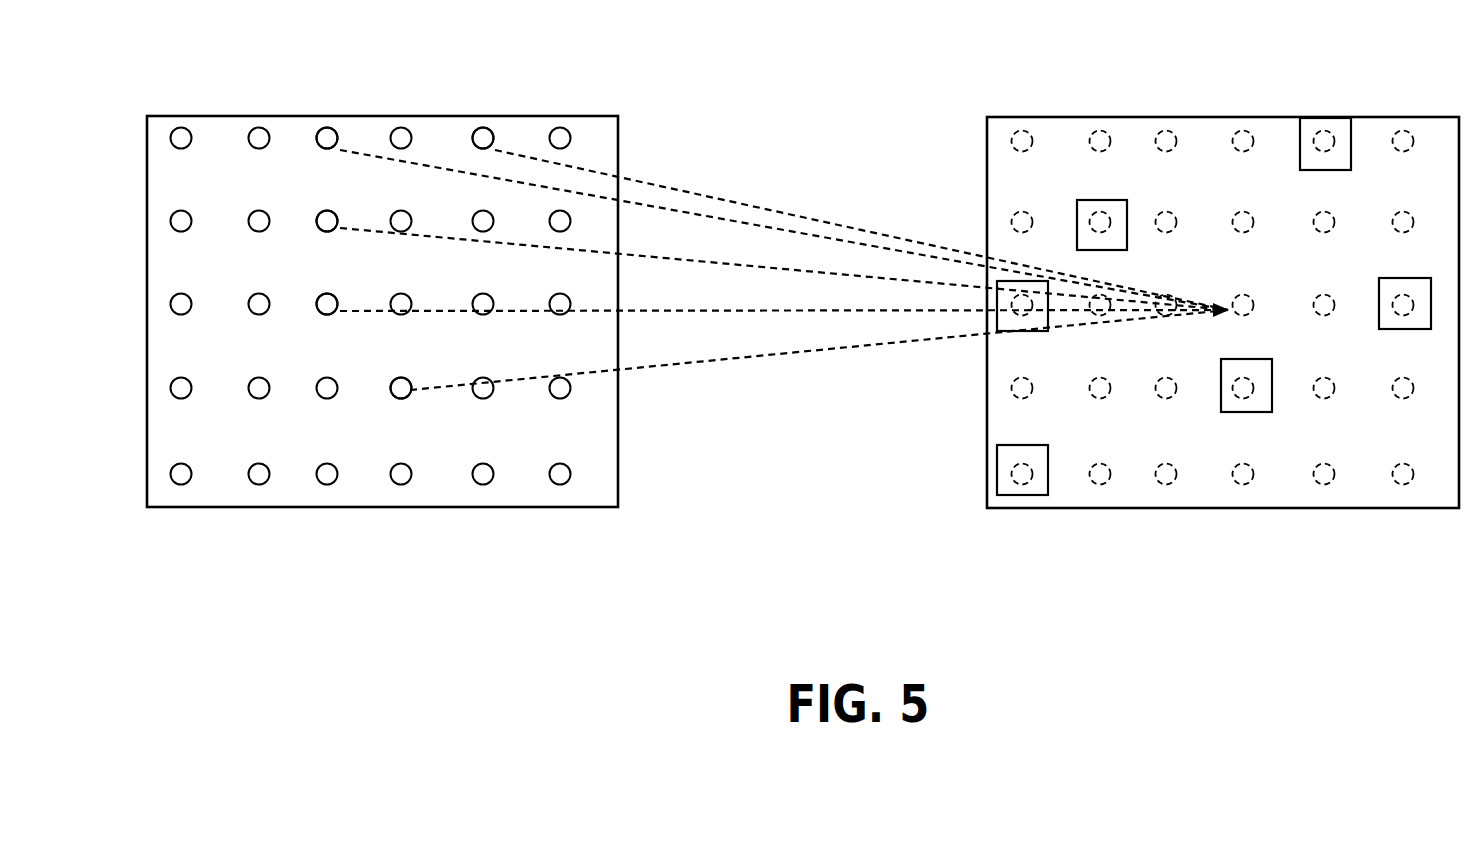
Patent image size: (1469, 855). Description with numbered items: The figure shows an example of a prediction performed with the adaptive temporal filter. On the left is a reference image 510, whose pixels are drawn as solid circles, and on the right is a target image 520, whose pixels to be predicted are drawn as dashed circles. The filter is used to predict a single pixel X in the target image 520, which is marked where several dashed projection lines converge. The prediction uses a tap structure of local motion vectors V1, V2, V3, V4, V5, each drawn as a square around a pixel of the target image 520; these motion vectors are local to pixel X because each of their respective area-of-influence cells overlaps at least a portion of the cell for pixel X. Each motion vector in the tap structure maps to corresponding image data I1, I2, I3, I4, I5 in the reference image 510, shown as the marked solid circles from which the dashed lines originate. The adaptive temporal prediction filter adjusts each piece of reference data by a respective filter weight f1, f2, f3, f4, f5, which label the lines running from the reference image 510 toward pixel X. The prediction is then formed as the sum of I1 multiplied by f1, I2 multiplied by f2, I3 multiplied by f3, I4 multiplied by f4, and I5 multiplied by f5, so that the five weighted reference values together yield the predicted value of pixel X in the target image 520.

The reference image 510 is at (358, 107).
The target image 520 is at (1228, 110).
The image data I1 is at (403, 405).
The image data I2 is at (337, 297).
The image data I3 is at (337, 214).
The image data I4 is at (337, 138).
The image data I5 is at (494, 133).
The filter weight f1 is at (819, 357).
The filter weight f2 is at (784, 325).
The filter weight f3 is at (784, 269).
The filter weight f4 is at (784, 230).
The filter weight f5 is at (861, 230).
The pixel X is at (1231, 310).
The local motion vector V1 is at (1246, 403).
The local motion vector V2 is at (1405, 320).
The local motion vector V3 is at (1325, 160).
The local motion vector V4 is at (1102, 241).
The local motion vector V5 is at (1022, 314).